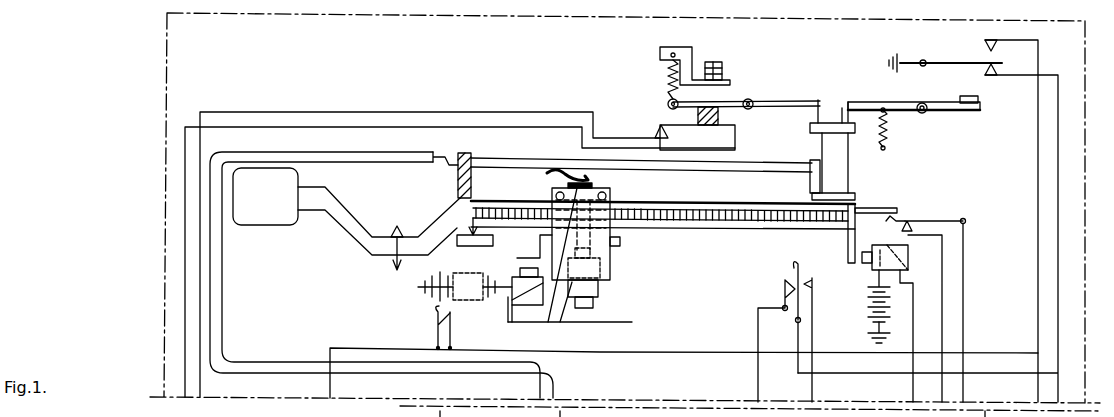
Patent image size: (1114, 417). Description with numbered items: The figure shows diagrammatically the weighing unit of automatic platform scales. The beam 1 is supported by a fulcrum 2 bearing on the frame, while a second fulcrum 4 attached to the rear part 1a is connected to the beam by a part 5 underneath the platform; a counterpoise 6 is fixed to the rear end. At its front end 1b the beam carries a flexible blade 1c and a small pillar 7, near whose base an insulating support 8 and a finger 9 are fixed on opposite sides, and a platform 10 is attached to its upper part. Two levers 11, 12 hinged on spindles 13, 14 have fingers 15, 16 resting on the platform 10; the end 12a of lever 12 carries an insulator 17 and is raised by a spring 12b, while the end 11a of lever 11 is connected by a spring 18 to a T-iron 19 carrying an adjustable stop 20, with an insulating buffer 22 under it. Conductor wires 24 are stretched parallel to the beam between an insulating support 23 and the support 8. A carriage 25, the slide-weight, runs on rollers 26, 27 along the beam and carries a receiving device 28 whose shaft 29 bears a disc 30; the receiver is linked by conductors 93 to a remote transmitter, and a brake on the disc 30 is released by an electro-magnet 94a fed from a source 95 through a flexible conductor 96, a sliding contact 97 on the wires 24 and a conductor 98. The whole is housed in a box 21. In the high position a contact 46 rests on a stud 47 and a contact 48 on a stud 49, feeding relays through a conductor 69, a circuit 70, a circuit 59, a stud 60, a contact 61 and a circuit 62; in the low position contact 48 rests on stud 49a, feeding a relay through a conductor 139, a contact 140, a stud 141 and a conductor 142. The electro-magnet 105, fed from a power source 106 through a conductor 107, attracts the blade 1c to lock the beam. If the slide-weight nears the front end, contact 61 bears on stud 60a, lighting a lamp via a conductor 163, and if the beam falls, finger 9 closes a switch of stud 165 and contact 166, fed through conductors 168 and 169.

The beam 1 is at (673, 222).
The rear part of the beam 1a is at (440, 210).
The front end of the beam 1b is at (812, 226).
The flexible blade 1c is at (886, 222).
The fulcrum 2 is at (476, 215).
The second fulcrum 4 is at (395, 228).
The part 5 is at (393, 262).
The counterpoise 6 is at (270, 203).
The small pillar 7 is at (841, 158).
The insulating support 8 is at (810, 176).
The finger 9 is at (885, 206).
The platform 10 is at (810, 128).
The lever 11 is at (795, 100).
The end of the lever 11 11a is at (733, 100).
The lever 12 is at (858, 102).
The end of the lever 12 12a is at (950, 113).
The spring 12b is at (887, 132).
The spindle 13 is at (920, 103).
The spindle 14 is at (750, 99).
The finger 15 is at (818, 100).
The finger 16 is at (842, 108).
The insulator 17 is at (965, 95).
The spring 18 is at (670, 70).
The T-iron 19 is at (682, 45).
The adjustable stop 20 is at (713, 60).
The box 21 is at (1075, 195).
The insulating buffer 22 is at (718, 116).
The insulating support 23 is at (465, 153).
The conductor wires 24 is at (676, 164).
The carriage 25 is at (602, 268).
The roller 26 is at (556, 194).
The roller 27 is at (605, 193).
The receiving device 28 is at (600, 288).
The shaft 29 is at (592, 253).
The disc 30 is at (592, 235).
The contact 46 is at (668, 100).
The stud 47 is at (655, 130).
The contact 48 is at (940, 62).
The stud 49 is at (997, 72).
The stud 49a is at (988, 42).
The circuit 59 is at (760, 385).
The stud 60 is at (793, 275).
The stud 60a is at (812, 282).
The contact 61 is at (780, 292).
The circuit 62 is at (1058, 75).
The conductor 69 is at (232, 112).
The circuit 70 is at (185, 130).
The conductors 93 is at (605, 322).
The electro-magnet 94a is at (522, 300).
The source 95 is at (458, 292).
The flexible conductor 96 is at (548, 322).
The sliding contact 97 is at (553, 168).
The conductor 98 is at (268, 160).
The electro-magnet 105 is at (908, 257).
The power source 106 is at (868, 300).
The conductor 107 is at (885, 322).
The conductor 139 is at (345, 345).
The contact 140 is at (436, 322).
The stud 141 is at (452, 330).
The conductor 142 is at (715, 352).
The conductor 163 is at (814, 332).
The stud 165 is at (907, 222).
The contact 166 is at (963, 218).
The conductor 168 is at (942, 328).
The conductor 169 is at (963, 270).